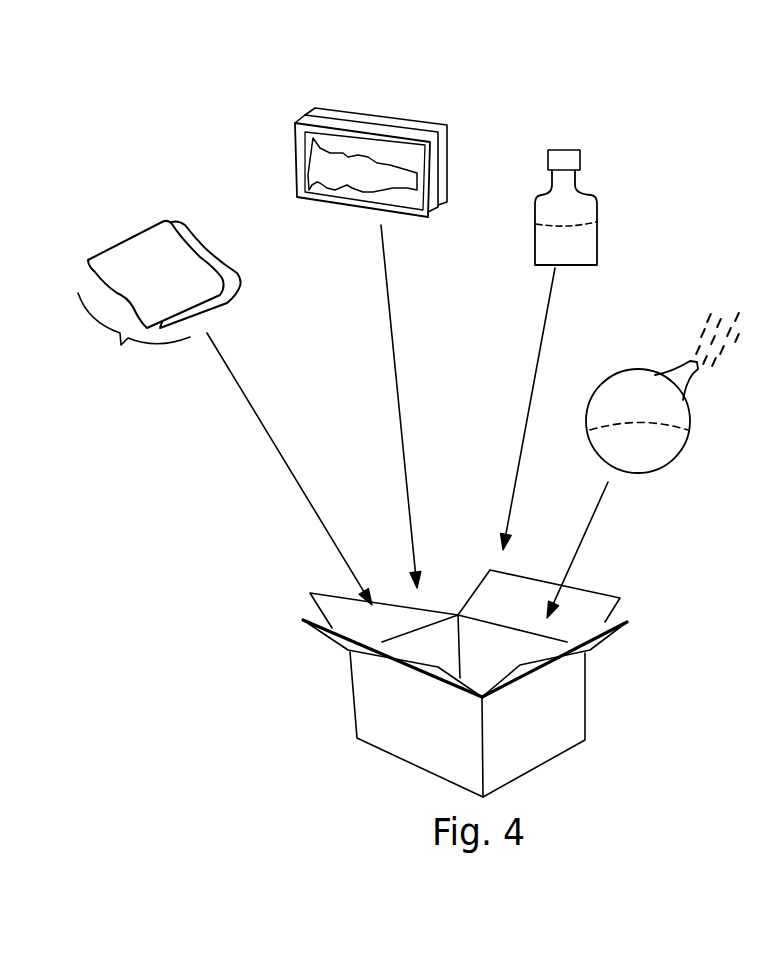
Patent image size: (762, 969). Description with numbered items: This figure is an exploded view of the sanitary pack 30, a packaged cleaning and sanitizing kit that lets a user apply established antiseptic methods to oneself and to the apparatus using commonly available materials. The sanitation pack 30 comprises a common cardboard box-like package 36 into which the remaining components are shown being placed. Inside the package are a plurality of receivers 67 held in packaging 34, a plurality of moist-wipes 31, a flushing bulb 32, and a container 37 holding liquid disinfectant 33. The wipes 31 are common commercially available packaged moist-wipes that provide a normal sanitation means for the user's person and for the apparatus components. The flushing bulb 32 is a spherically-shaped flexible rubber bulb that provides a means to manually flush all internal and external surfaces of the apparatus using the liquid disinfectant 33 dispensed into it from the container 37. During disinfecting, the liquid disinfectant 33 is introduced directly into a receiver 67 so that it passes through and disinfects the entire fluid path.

The sanitary pack 30 is at (485, 683).
The moist-wipes 31 is at (225, 413).
The flushing bulb 32 is at (630, 417).
The liquid disinfectant 33 is at (616, 332).
The packaging 34 is at (336, 312).
The box-like package 36 is at (365, 715).
The container 37 is at (575, 227).
The receivers 67 is at (328, 112).